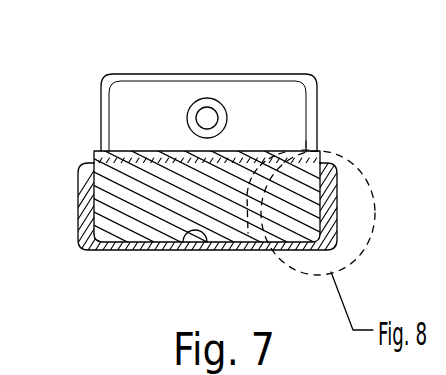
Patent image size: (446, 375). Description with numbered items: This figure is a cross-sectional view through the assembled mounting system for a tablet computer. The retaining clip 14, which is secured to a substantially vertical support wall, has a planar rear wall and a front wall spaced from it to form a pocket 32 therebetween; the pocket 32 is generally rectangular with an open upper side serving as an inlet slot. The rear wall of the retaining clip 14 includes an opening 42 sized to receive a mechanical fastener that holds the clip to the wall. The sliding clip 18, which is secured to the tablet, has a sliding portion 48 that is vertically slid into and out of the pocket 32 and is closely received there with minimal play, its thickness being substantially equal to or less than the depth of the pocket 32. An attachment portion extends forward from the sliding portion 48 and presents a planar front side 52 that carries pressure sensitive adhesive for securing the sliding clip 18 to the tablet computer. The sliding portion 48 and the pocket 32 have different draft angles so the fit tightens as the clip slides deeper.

The retaining clip 14 is at (78, 218).
The sliding clip 18 is at (146, 151).
The pocket 32 is at (185, 238).
The opening 42 is at (219, 104).
The sliding portion 48 is at (158, 151).
The planar front side 52 is at (123, 220).